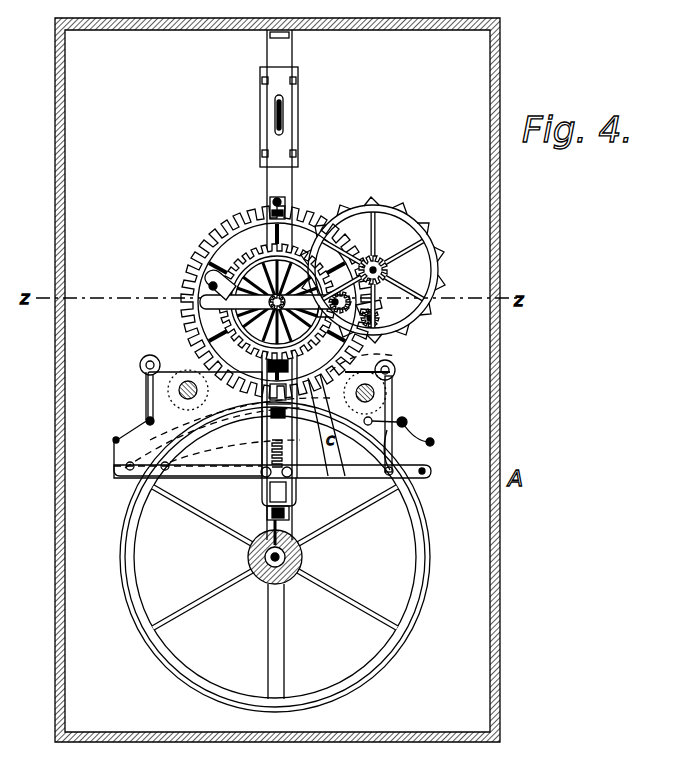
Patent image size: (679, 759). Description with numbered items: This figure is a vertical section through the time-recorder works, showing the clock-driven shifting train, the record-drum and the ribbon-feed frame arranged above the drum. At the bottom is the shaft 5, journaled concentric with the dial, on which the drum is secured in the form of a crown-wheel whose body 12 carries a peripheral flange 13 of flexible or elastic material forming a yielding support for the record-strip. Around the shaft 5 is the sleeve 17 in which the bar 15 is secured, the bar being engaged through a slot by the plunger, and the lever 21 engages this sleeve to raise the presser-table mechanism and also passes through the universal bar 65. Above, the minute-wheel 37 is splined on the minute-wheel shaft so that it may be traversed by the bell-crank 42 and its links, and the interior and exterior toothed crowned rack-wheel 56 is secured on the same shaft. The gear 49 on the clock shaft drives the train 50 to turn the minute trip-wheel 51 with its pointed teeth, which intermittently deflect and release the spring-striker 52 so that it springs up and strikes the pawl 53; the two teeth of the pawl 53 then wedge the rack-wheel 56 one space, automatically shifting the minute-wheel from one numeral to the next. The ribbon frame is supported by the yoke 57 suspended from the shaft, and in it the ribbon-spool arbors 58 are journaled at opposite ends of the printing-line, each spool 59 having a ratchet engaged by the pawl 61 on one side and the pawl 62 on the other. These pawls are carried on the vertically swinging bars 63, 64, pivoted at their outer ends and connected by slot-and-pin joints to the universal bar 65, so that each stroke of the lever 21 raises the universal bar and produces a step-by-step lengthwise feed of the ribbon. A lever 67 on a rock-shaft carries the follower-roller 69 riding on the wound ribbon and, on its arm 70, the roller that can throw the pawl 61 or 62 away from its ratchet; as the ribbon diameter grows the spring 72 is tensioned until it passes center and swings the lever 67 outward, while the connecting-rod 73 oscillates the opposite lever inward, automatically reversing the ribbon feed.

The bell-crank 42 is at (298, 116).
The pawl 53 is at (284, 205).
The minute-wheel 37 is at (210, 238).
The crowned rack-wheel 56 is at (246, 228).
The gear 49 is at (200, 317).
The spring-striker 52 is at (205, 272).
The yoke 57 is at (198, 336).
The minute trip-wheel 51 is at (385, 270).
The train 50 is at (420, 300).
The pawl 62 is at (140, 441).
The spool 59 is at (203, 364).
The follower-roller 69 is at (271, 365).
The lever 67 is at (276, 422).
The ribbon-spool arbor 58 is at (386, 392).
The connecting-rod 73 is at (400, 357).
The arm 70 is at (410, 421).
The spring 72 is at (432, 438).
The pawl 61 is at (392, 448).
The swinging bar 63 is at (432, 471).
The swinging bar 64 is at (205, 478).
The universal bar 65 is at (290, 492).
The lever 21 is at (290, 511).
The peripheral flange 13 is at (288, 557).
The drum body 12 is at (275, 557).
The bar 15 is at (266, 597).
The sleeve 17 is at (302, 555).
The shaft 5 is at (306, 563).